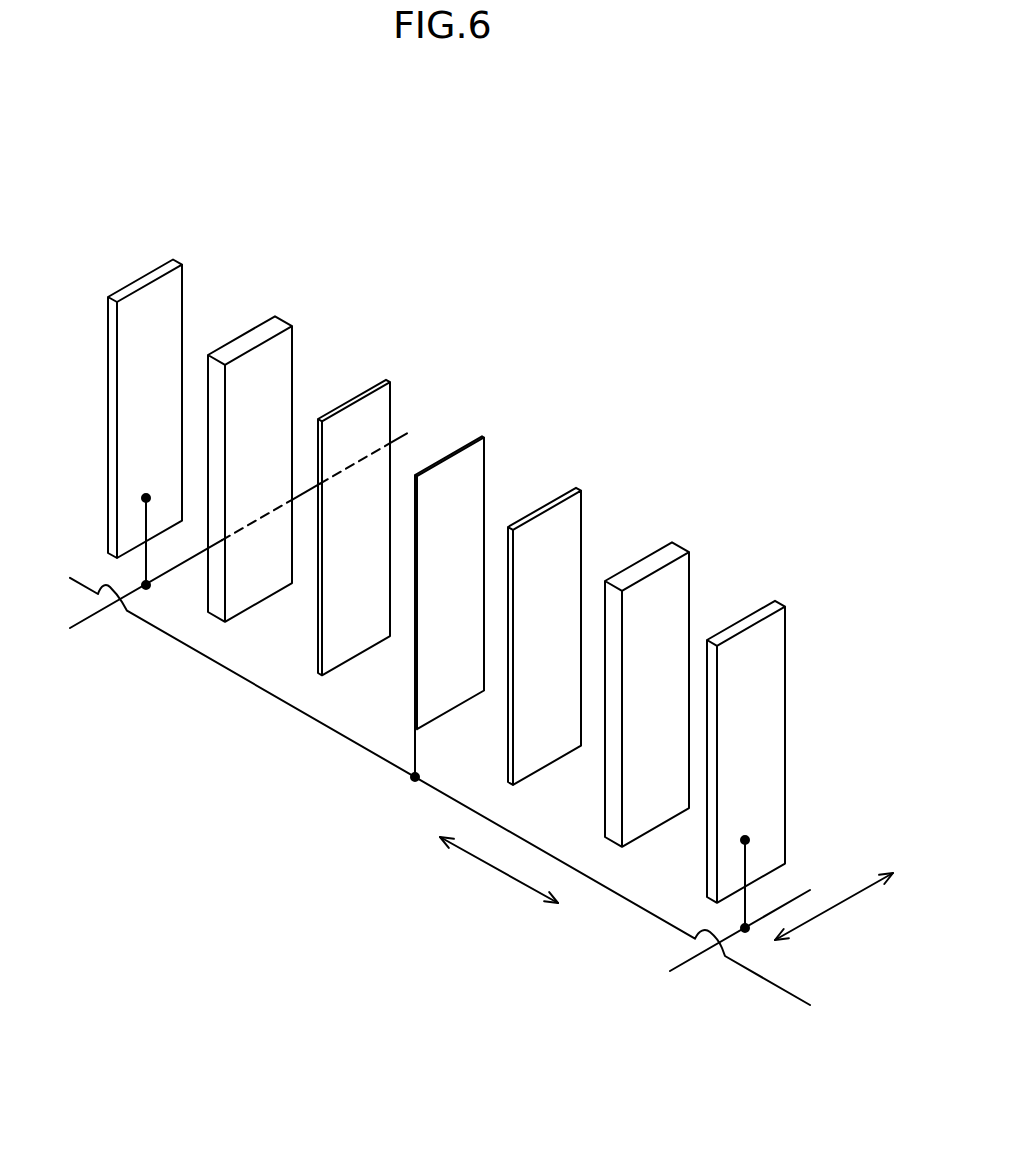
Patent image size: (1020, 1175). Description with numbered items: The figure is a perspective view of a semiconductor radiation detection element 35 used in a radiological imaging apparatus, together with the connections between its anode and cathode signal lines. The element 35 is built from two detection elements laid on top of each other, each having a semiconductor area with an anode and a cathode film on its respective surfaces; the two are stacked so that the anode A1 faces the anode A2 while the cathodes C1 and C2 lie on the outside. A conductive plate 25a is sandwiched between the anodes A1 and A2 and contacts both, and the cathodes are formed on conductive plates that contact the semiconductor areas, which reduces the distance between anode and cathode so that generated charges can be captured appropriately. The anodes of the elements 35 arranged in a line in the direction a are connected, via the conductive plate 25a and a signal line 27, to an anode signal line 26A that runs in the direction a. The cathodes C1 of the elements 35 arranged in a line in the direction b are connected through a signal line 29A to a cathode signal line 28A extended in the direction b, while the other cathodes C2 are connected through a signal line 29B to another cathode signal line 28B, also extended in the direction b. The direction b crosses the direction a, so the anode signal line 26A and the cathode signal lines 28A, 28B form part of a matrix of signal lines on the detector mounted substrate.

The semiconductor radiation detection element 35 is at (543, 182).
The conductive plate 25a is at (468, 444).
The signal line 29A is at (145, 563).
The cathode signal line 28A is at (160, 575).
The anode signal line 26A is at (383, 757).
The signal line 27 is at (417, 753).
The cathode signal line 28B is at (793, 895).
The signal line 29B is at (748, 913).
The direction a is at (497, 872).
The direction b is at (837, 908).